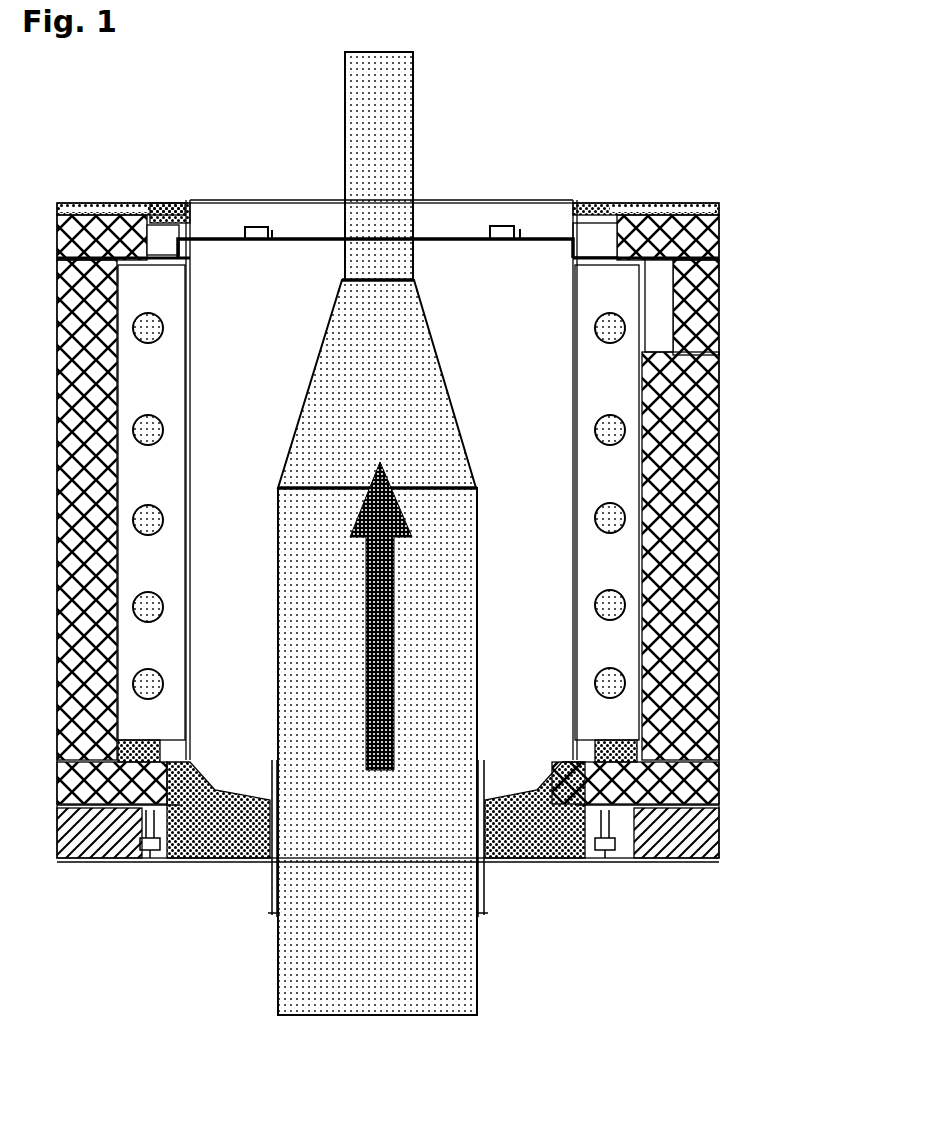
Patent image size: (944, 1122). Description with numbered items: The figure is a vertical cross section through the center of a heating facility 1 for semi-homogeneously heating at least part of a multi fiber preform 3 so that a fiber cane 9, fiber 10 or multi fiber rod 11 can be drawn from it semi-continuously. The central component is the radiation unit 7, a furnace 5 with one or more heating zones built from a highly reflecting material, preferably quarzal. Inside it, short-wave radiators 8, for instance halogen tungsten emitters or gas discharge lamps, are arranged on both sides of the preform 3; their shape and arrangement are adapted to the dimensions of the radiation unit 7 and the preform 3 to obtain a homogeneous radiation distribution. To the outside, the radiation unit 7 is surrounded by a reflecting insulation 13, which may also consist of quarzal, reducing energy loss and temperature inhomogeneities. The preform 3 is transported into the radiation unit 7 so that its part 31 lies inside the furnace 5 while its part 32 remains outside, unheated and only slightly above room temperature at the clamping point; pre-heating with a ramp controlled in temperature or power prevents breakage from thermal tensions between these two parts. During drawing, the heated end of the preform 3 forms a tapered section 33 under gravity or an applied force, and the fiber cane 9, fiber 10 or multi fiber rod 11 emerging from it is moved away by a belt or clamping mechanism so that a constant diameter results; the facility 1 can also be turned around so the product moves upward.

The facility 1 is at (670, 949).
The preform 3 is at (394, 671).
The furnace 5 is at (198, 860).
The radiation unit 7 is at (248, 358).
The radiators 8 is at (155, 428).
The fiber cane 9 is at (460, 165).
The fiber 10 is at (460, 165).
The multi fiber rod 11 is at (410, 147).
The reflecting insulation 13 is at (690, 512).
The part of the preform inside the furnace 31 is at (478, 668).
The part of the preform outside the furnace 32 is at (274, 942).
The tapered section 33 is at (437, 398).